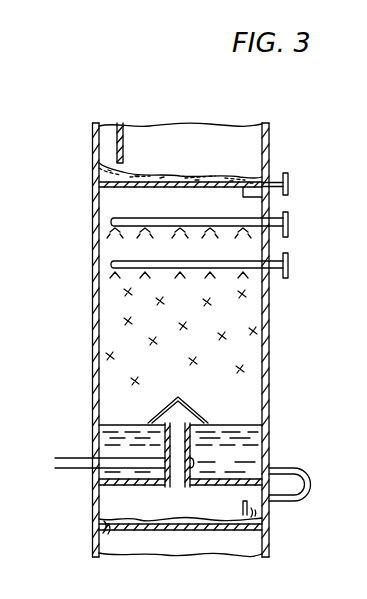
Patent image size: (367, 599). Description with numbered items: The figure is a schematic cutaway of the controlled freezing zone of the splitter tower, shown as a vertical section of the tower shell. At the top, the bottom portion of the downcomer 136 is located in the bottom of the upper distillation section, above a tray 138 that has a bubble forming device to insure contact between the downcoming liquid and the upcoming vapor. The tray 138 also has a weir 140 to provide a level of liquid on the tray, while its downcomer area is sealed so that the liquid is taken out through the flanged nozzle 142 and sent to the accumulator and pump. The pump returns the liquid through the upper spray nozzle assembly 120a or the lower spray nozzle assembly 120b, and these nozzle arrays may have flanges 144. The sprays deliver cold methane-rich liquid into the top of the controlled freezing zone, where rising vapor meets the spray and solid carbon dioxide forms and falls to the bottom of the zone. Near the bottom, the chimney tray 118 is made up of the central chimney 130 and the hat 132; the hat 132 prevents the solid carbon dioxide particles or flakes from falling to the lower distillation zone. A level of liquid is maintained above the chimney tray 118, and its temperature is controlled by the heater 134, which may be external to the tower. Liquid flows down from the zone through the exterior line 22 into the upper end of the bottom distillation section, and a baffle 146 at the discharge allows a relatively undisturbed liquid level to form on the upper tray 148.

The exterior line 22 is at (312, 478).
The chimney tray 118 is at (125, 452).
The upper spray nozzle assembly 120a is at (113, 223).
The lower spray nozzle assembly 120b is at (110, 266).
The central chimney 130 is at (195, 443).
The hat 132 is at (197, 412).
The heater 134 is at (82, 468).
The downcomer 136 is at (123, 145).
The tray 138 is at (118, 186).
The weir 140 is at (237, 170).
The flanged nozzle 142 is at (288, 180).
The flanges 144 is at (288, 265).
The baffle 146 is at (240, 503).
The upper tray 148 is at (237, 533).